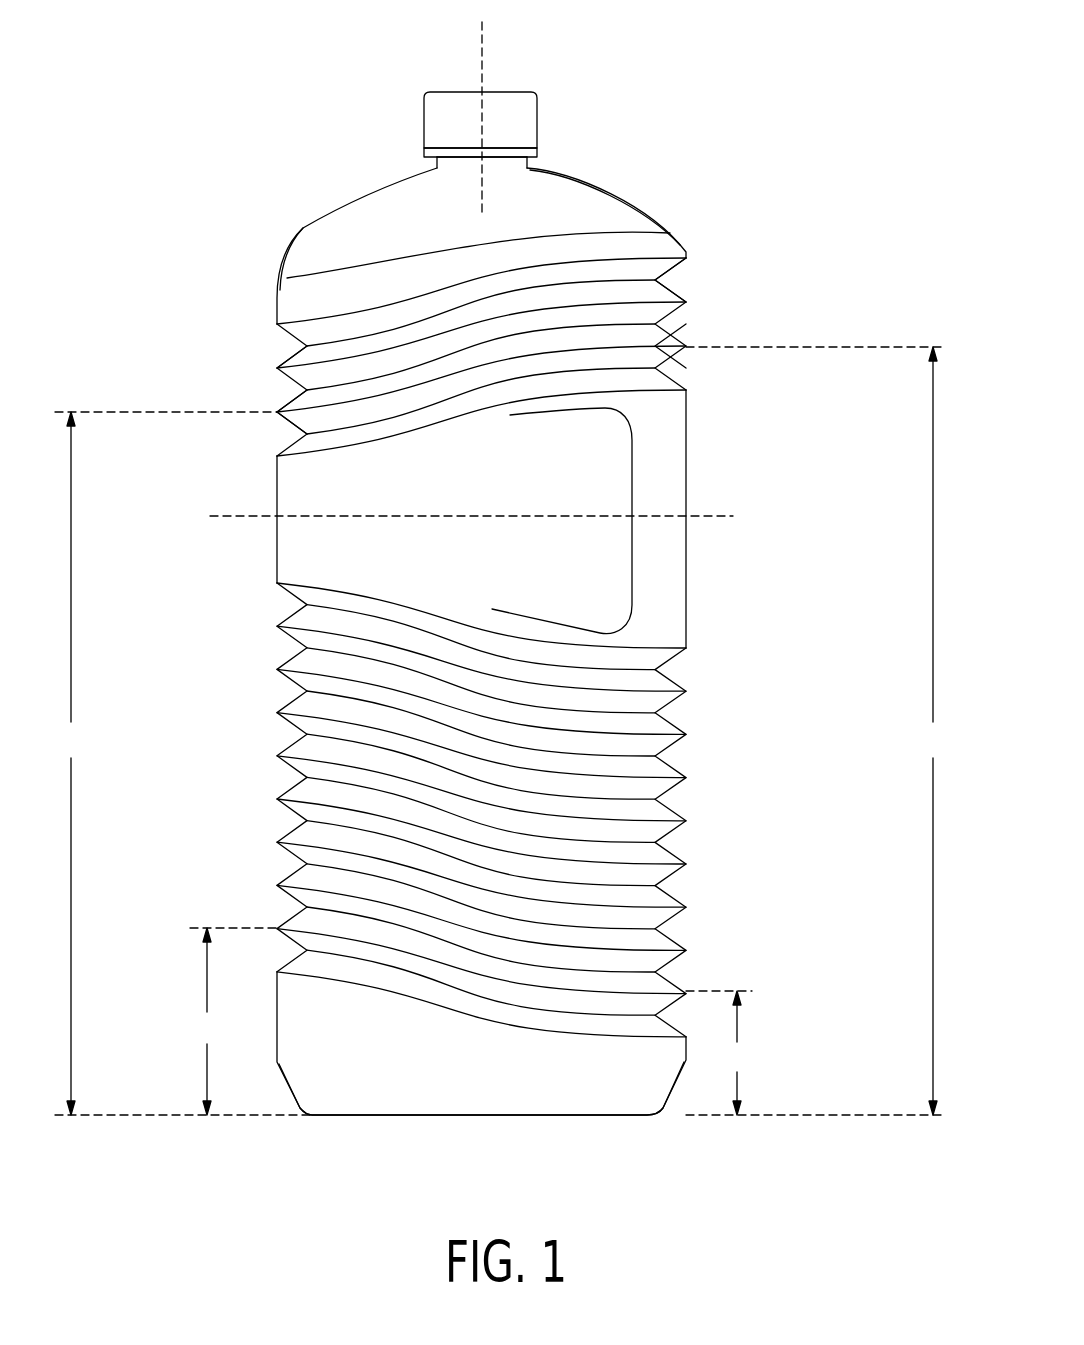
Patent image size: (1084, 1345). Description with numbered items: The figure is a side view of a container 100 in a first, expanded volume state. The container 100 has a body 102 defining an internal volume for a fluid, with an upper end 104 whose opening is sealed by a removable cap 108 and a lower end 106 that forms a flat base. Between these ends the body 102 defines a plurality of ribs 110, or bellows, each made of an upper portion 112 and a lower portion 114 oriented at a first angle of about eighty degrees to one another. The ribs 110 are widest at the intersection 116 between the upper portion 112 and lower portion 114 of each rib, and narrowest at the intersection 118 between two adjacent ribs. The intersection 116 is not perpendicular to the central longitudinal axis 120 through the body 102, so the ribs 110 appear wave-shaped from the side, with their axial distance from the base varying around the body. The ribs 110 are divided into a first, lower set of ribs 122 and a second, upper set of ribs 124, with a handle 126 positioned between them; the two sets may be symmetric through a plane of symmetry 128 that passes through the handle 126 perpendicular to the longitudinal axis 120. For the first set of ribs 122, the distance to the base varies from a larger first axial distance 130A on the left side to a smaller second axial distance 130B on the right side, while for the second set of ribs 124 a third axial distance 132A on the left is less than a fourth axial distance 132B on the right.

The container 100 is at (276, 100).
The body 102 is at (292, 245).
The upper end 104 is at (555, 175).
The lower end 106 is at (583, 1116).
The removable cap 108 is at (513, 117).
The ribs 110 is at (287, 360).
The upper portion 112 is at (290, 398).
The lower portion 114 is at (288, 423).
The intersection between upper portion and lower portion 116 is at (663, 345).
The intersection between two adjacent ribs 118 is at (658, 280).
The central longitudinal axis 120 is at (483, 52).
The first set of ribs 122 is at (777, 1034).
The second set of ribs 124 is at (772, 260).
The handle 126 is at (632, 452).
The plane of symmetry 128 is at (733, 518).
The first axial distance 130A is at (225, 1021).
The second axial distance 130B is at (728, 1053).
The third axial distance 132A is at (177, 763).
The fourth axial distance 132B is at (824, 731).